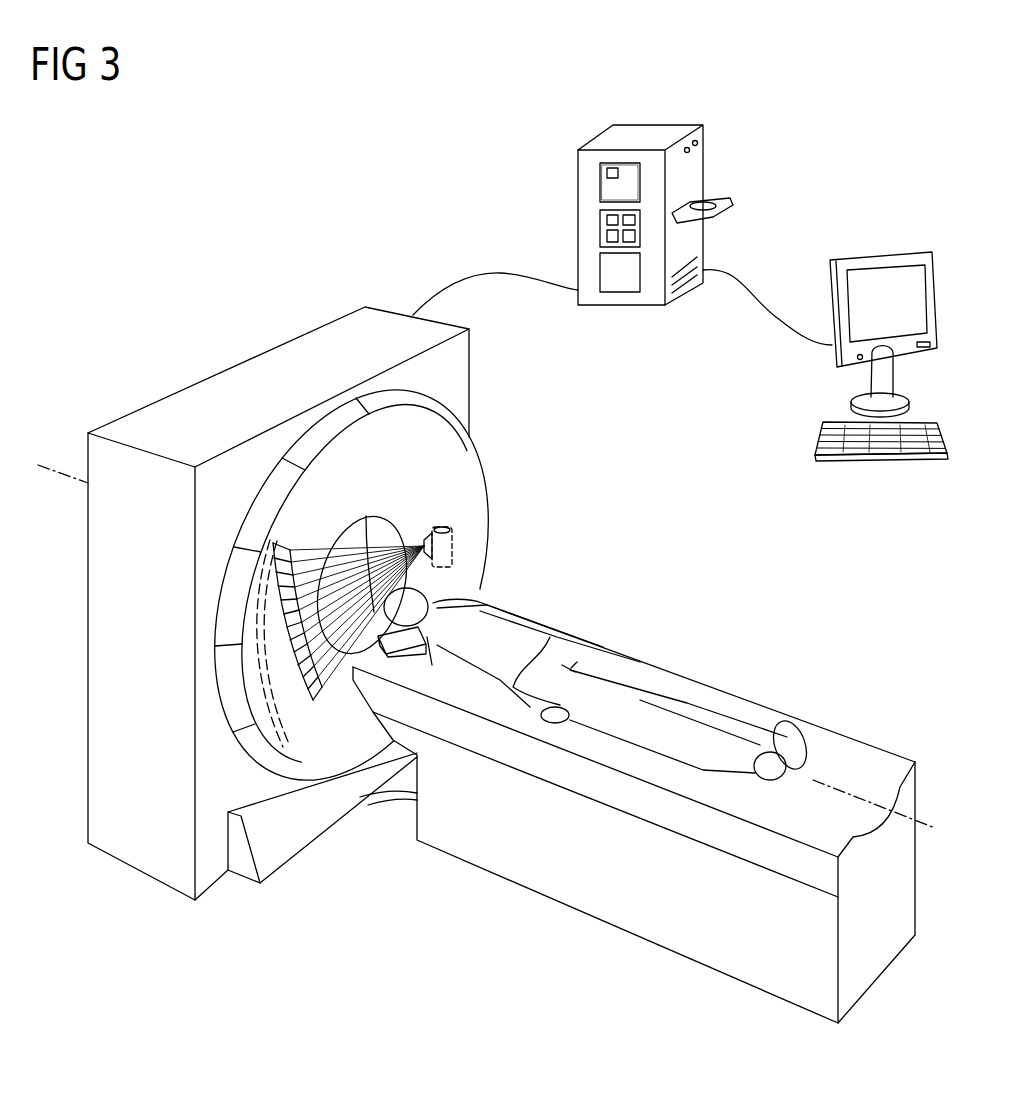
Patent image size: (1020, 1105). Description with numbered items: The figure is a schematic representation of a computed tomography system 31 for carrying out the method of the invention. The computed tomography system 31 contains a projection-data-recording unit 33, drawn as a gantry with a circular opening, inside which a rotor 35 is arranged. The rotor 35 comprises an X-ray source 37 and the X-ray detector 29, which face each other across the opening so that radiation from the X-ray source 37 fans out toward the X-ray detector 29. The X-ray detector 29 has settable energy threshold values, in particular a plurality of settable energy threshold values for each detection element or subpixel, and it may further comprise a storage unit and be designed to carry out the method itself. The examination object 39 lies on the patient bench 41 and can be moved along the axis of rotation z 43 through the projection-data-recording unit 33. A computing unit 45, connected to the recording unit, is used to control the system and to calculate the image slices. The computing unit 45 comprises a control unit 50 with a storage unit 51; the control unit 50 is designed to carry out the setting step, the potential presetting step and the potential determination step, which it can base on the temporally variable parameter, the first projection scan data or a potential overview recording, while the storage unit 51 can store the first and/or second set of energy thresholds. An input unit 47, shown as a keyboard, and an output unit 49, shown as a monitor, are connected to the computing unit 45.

The X-ray detector 29 is at (290, 717).
The computed tomography system 31 is at (62, 698).
The projection-data-recording unit 33 is at (255, 338).
The rotor 35 is at (460, 487).
The X-ray source 37 is at (452, 547).
The examination object 39 is at (513, 652).
The patient bench 41 is at (762, 718).
The axis of rotation z 43 is at (75, 483).
The computing unit 45 is at (640, 135).
The input unit 47 is at (815, 448).
The output unit 49 is at (905, 250).
The control unit 50 is at (600, 195).
The storage unit 51 is at (600, 172).